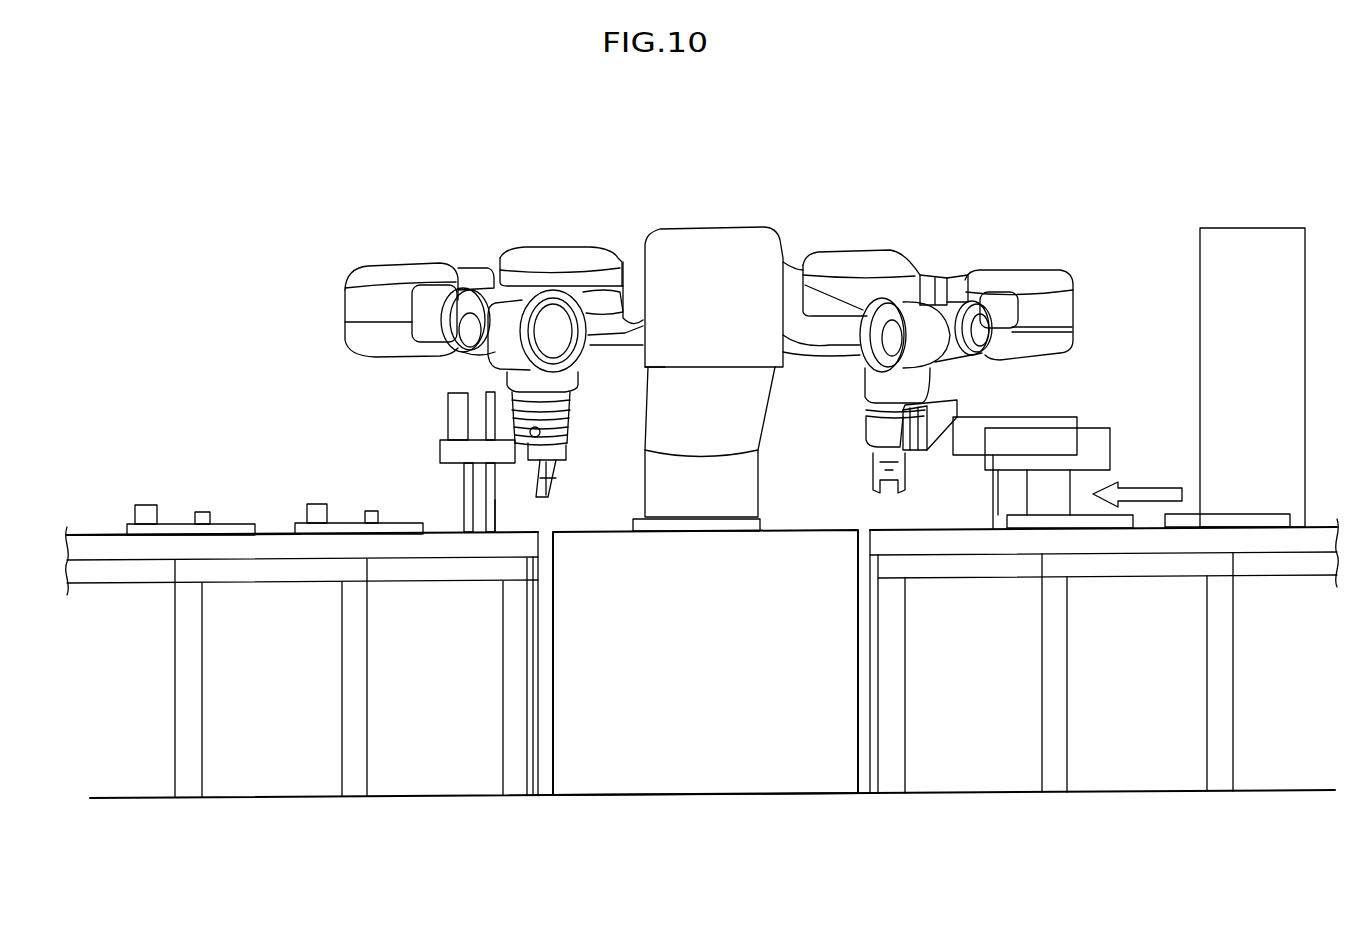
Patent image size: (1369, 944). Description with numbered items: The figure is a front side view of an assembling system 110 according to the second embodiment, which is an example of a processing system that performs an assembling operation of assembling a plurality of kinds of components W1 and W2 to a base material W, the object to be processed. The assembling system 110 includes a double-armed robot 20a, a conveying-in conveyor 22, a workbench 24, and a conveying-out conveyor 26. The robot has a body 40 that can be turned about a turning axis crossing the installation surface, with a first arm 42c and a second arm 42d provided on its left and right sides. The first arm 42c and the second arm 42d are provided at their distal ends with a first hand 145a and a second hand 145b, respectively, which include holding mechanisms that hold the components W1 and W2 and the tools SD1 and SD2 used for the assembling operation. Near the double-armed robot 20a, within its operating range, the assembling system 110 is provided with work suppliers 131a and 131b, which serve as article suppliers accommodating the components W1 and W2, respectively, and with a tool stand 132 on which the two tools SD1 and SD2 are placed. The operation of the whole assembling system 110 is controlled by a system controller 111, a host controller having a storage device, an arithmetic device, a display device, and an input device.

The double-armed robot 20a is at (703, 182).
The body 40 is at (765, 242).
The first arm 42c is at (943, 240).
The second arm 42d is at (438, 240).
The system controller 111 is at (1208, 268).
The assembling system 110 is at (222, 398).
The tool SD1 is at (458, 417).
The tool SD2 is at (488, 392).
The component W1 is at (316, 505).
The component W2 is at (380, 508).
The first hand 145a is at (872, 484).
The second hand 145b is at (556, 470).
The tool stand 132 is at (497, 500).
The work supplier 131a is at (1110, 445).
The work supplier 131b is at (1072, 412).
The base material W is at (1262, 518).
The conveying-out conveyor 26 is at (130, 550).
The conveying-in conveyor 22 is at (1290, 540).
The workbench 24 is at (618, 752).